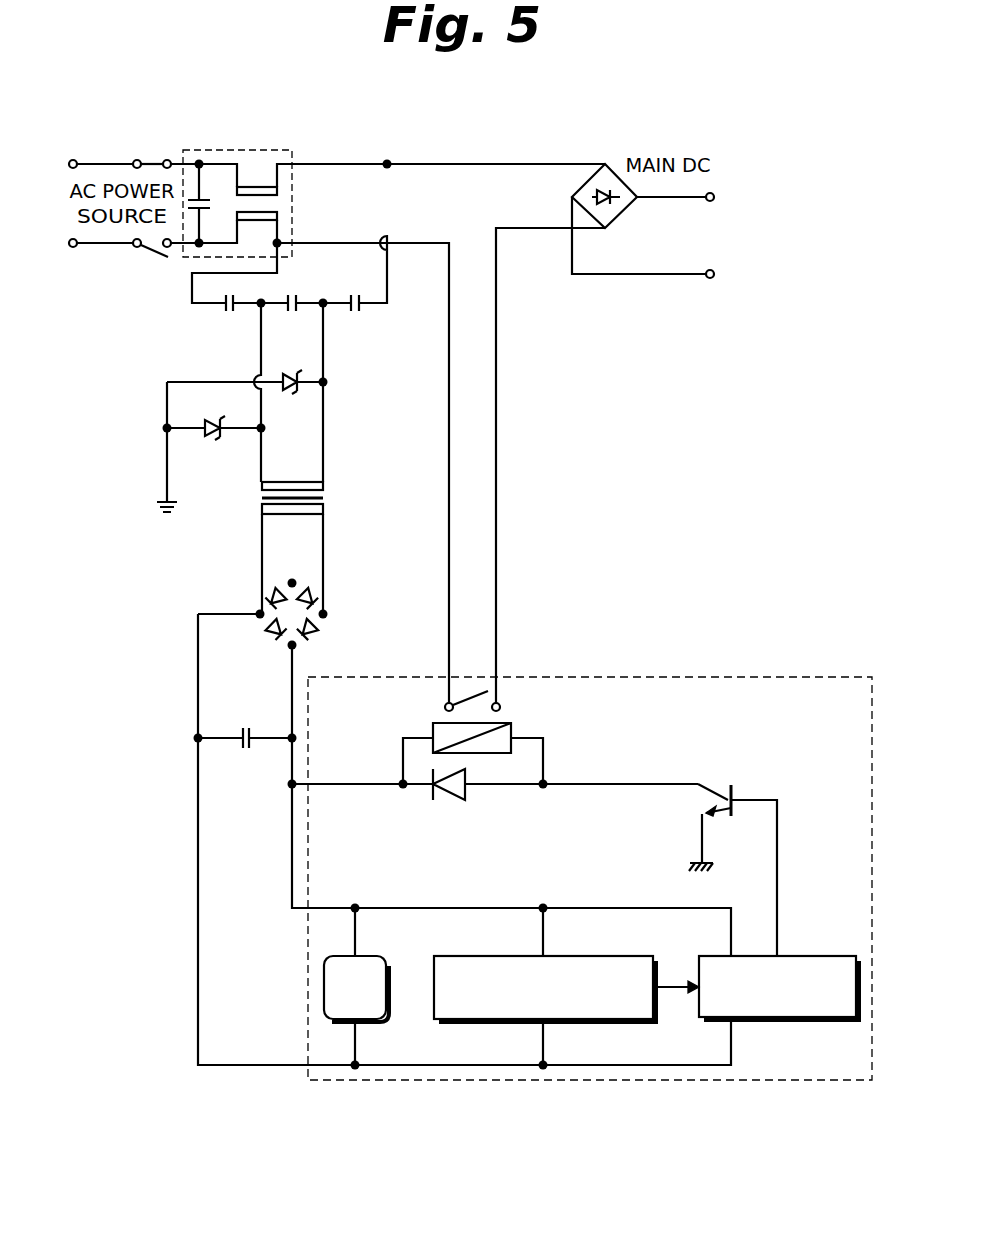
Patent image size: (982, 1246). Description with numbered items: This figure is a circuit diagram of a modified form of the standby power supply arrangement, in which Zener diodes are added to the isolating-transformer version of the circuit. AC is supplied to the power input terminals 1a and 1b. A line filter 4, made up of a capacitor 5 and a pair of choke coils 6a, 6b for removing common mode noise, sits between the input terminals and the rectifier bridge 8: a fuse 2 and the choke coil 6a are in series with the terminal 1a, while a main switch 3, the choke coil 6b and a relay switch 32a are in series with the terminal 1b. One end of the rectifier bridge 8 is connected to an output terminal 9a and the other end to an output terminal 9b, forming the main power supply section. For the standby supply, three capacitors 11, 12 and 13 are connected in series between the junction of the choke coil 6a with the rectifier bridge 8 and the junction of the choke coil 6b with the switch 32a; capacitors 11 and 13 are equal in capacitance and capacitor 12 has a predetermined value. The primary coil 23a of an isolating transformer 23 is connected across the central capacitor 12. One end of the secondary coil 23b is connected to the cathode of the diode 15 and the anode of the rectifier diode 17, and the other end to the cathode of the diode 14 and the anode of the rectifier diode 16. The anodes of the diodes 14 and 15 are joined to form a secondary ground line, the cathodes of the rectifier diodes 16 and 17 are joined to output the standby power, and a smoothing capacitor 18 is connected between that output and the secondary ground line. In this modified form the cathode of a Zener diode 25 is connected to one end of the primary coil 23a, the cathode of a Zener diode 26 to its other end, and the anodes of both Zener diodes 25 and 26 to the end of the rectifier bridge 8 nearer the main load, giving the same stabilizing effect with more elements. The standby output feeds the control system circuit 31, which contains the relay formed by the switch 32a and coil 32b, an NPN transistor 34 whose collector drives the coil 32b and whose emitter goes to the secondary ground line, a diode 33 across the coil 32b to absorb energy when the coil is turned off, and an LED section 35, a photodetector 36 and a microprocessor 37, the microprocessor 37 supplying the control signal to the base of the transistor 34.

The power input terminal 1a is at (73, 160).
The power input terminal 1b is at (73, 249).
The fuse 2 is at (152, 160).
The main switch 3 is at (156, 259).
The line filter 4 is at (280, 149).
The capacitor 5 is at (212, 197).
The choke coil 6a is at (256, 185).
The choke coil 6b is at (288, 213).
The rectifier bridge 8 is at (605, 162).
The output terminal 9a is at (715, 197).
The output terminal 9b is at (715, 274).
The capacitor 11 is at (229, 313).
The capacitor 12 is at (292, 313).
The capacitor 13 is at (355, 313).
The diode 14 is at (318, 595).
The diode 15 is at (268, 595).
The rectifier diode 16 is at (318, 629).
The rectifier diode 17 is at (270, 633).
The smoothing capacitor 18 is at (246, 750).
The isolating transformer 23 is at (300, 505).
The primary coil 23a is at (323, 483).
The secondary coil 23b is at (323, 509).
The Zener diode 25 is at (300, 394).
The Zener diode 26 is at (222, 433).
The control system circuit 31 is at (678, 676).
The switch 32a is at (473, 692).
The coil 32b is at (513, 725).
The diode 33 is at (468, 801).
The NPN transistor 34 is at (698, 802).
The LED section 35 is at (372, 955).
The photodetector 36 is at (580, 955).
The microprocessor 37 is at (818, 954).